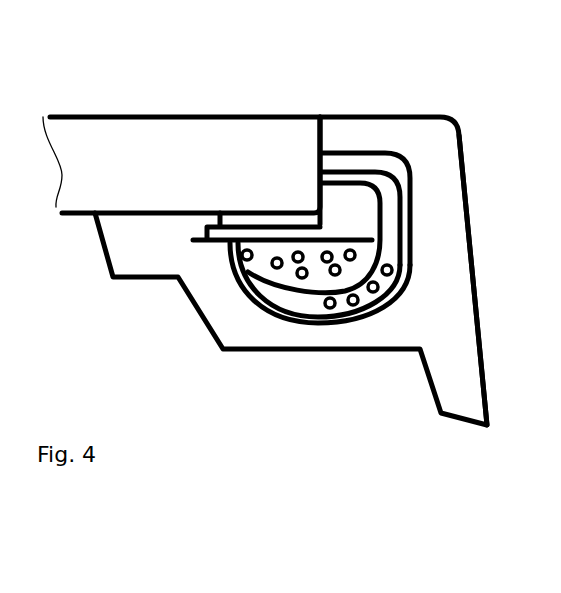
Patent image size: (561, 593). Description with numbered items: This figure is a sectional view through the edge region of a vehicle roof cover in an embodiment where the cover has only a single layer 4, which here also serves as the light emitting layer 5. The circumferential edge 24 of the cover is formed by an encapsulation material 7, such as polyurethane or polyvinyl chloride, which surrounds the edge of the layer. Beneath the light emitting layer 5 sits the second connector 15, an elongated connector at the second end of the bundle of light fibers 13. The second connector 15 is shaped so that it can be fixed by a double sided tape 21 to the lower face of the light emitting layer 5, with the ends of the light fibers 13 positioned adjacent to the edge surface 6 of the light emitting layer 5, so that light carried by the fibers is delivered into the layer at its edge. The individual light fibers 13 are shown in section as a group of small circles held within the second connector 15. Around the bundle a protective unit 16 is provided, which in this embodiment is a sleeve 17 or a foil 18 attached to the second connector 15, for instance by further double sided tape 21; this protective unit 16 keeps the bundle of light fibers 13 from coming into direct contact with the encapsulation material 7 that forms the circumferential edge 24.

The upper layer 4 is at (177, 130).
The light emitting layer 5 is at (90, 178).
The edge surface 6 is at (313, 163).
The encapsulation material 7 is at (370, 133).
The light fibers 13 is at (368, 322).
The second connector 15 is at (386, 176).
The protective unit 16 is at (292, 320).
The sleeve 17 is at (292, 320).
The foil 18 is at (292, 320).
The double sided tape 21 is at (247, 214).
The circumferential edge 24 is at (443, 166).